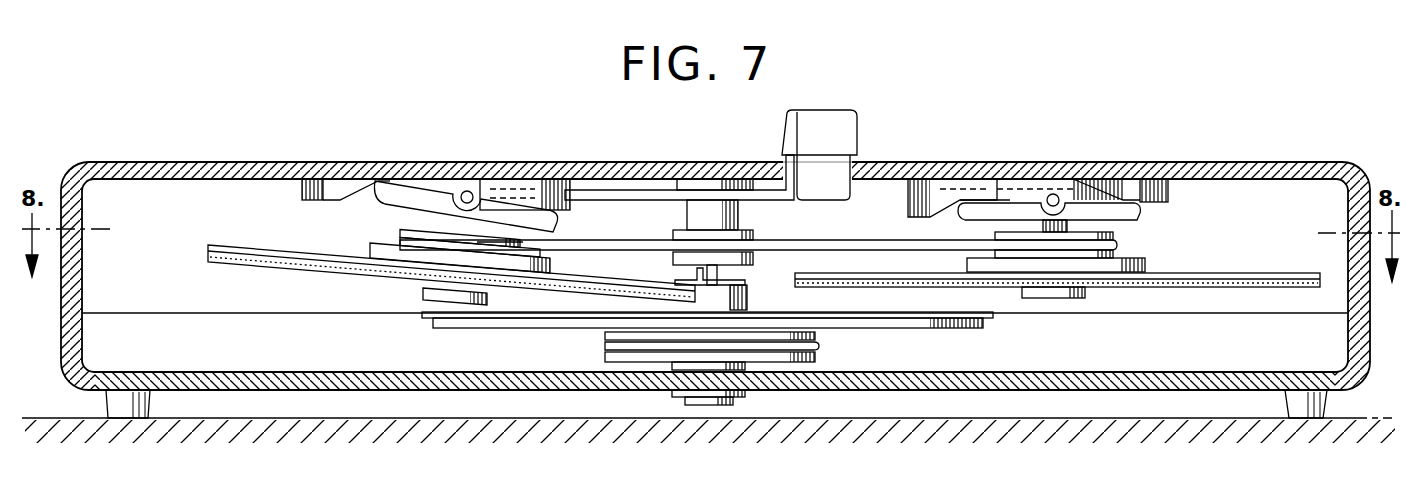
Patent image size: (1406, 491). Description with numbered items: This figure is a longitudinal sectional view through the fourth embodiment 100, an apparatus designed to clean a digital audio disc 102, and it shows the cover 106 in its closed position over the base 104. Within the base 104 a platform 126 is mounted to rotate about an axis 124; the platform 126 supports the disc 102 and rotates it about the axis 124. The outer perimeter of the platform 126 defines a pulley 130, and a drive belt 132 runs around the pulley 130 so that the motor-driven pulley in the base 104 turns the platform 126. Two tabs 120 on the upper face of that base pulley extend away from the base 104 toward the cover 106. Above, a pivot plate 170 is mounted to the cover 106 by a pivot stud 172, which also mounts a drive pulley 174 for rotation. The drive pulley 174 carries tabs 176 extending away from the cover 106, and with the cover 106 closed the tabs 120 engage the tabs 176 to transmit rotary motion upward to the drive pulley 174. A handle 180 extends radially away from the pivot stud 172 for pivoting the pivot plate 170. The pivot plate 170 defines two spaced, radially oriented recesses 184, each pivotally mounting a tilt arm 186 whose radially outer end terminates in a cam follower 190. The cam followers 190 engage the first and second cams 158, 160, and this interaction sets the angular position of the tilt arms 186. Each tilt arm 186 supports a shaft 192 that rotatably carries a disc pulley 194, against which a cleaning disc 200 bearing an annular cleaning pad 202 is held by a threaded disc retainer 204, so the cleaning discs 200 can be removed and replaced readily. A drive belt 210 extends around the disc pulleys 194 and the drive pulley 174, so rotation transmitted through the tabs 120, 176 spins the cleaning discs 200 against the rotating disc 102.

The fourth embodiment 100 is at (1024, 140).
The digital audio disc 102 is at (995, 317).
The base 104 is at (1370, 353).
The cover 106 is at (1348, 160).
The tabs 120 is at (697, 275).
The axis 124 is at (733, 403).
The platform 126 is at (818, 336).
The pulley 130 is at (820, 358).
The drive belt 132 is at (605, 345).
The first cam 158 is at (318, 190).
The second cam 160 is at (553, 180).
The pivot plate 170 is at (663, 193).
The pivot stud 172 is at (738, 212).
The drive pulley 174 is at (753, 233).
The tabs 176 is at (717, 273).
The handle 180 is at (858, 128).
The recesses 184 is at (443, 190).
The tilt arm 186 is at (468, 193).
The cam follower 190 is at (370, 200).
The shaft 192 is at (523, 238).
The disc pulley 194 is at (403, 225).
The cleaning disc 200 is at (282, 257).
The annular cleaning pad 202 is at (230, 263).
The disc retainer 204 is at (420, 290).
The drive belt 210 is at (898, 248).